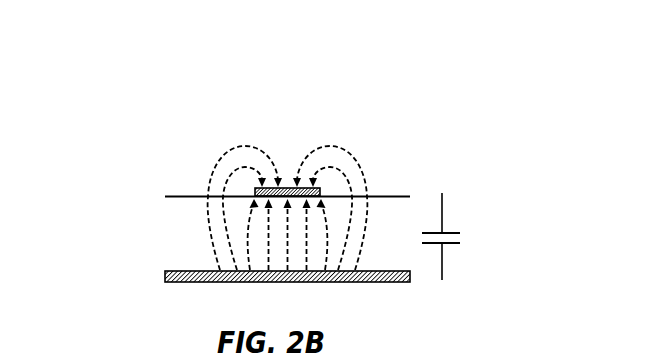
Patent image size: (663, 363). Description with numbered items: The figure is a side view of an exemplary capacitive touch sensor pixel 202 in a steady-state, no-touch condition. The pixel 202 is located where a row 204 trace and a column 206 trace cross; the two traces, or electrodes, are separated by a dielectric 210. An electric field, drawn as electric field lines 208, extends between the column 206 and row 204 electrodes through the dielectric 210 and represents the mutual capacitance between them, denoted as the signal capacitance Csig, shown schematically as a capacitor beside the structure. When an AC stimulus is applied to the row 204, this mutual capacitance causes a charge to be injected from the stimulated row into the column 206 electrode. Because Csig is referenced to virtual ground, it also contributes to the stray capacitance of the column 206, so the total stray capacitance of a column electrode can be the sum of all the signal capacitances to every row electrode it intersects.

The pixel 202 is at (429, 164).
The row trace 204 is at (177, 271).
The column trace 206 is at (288, 188).
The electric field lines 208 is at (327, 148).
The dielectric 210 is at (202, 173).